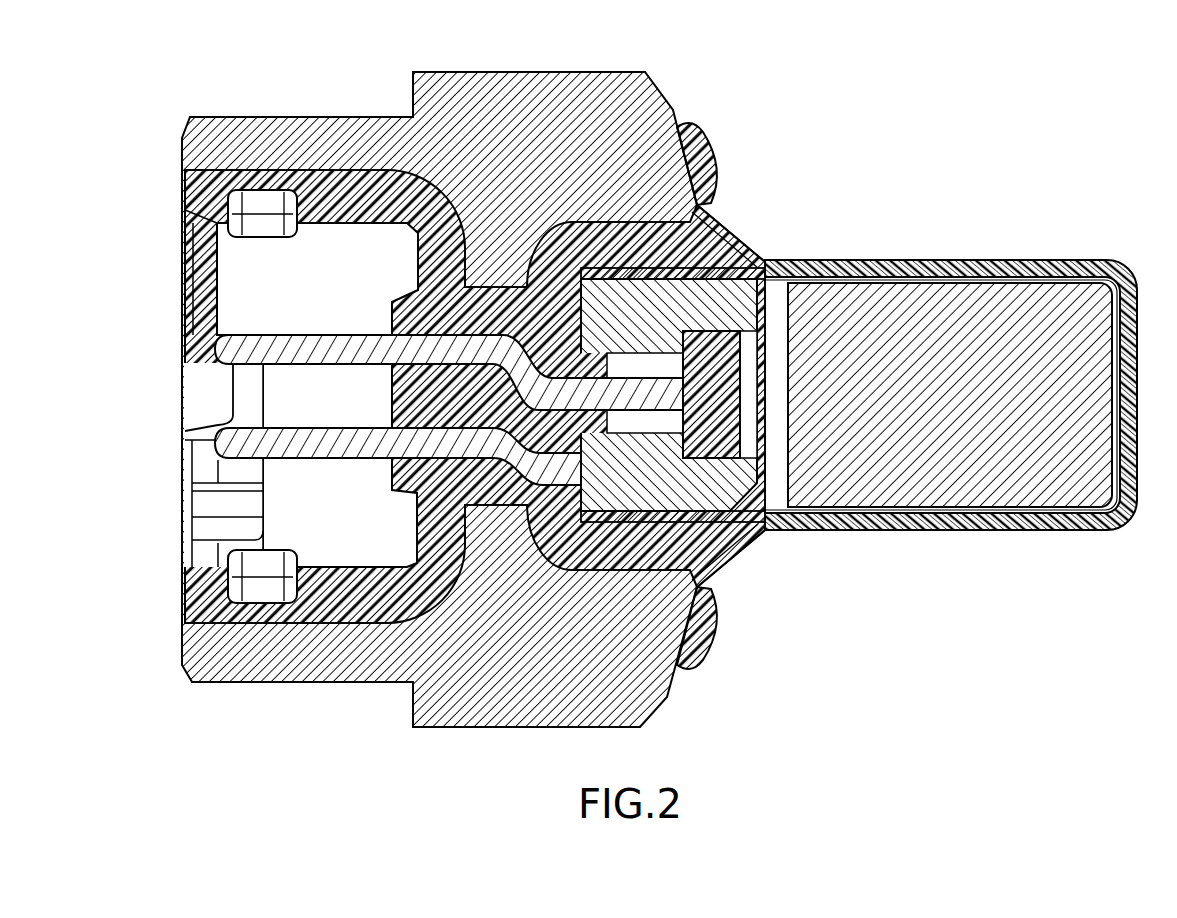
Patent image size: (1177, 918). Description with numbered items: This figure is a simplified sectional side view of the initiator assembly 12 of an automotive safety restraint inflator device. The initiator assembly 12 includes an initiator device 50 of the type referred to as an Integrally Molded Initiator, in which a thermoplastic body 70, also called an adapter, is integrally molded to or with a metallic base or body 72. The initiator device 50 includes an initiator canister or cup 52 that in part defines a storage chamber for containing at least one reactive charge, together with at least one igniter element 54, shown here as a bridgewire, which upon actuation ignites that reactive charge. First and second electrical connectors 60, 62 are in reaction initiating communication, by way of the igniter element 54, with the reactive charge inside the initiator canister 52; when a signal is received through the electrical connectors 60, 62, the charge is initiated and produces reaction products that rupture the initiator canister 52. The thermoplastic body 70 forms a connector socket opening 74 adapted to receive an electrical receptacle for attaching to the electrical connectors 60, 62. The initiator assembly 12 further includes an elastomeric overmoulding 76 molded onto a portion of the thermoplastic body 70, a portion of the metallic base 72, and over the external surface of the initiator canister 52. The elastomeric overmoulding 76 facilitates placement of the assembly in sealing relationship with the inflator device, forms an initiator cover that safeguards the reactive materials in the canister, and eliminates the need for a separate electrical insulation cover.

The initiator assembly 12 is at (848, 131).
The initiator device 50 is at (804, 588).
The initiator canister 52 is at (907, 279).
The igniter element 54 is at (693, 397).
The first electrical connector 60 is at (232, 345).
The second electrical connector 62 is at (225, 447).
The thermoplastic body 70 is at (633, 547).
The metallic base 72 is at (535, 100).
The connector socket opening 74 is at (161, 331).
The elastomeric overmoulding 76 is at (932, 533).